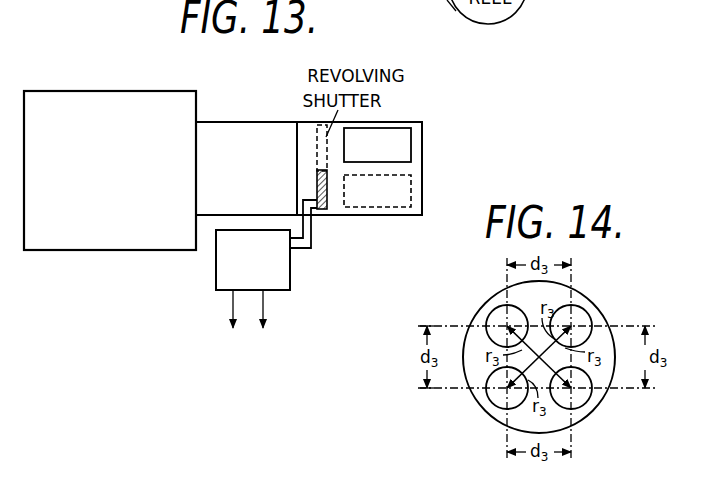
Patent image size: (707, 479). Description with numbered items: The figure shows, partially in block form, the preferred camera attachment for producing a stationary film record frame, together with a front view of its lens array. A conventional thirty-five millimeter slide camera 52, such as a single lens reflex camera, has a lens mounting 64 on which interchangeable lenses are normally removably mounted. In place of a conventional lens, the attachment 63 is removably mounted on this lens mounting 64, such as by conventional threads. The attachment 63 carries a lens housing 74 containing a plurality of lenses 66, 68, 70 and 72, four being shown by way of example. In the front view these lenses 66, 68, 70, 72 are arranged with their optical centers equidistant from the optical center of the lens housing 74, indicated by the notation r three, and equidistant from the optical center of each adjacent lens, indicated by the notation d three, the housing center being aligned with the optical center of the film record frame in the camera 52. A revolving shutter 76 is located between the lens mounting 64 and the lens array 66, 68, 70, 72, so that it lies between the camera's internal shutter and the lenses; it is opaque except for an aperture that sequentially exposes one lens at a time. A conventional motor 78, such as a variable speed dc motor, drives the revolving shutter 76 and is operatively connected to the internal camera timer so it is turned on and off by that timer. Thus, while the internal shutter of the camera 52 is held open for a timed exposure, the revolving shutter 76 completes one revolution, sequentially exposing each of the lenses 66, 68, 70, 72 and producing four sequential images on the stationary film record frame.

In FIG. 13, the 35 millimeter slide camera 52 is at (153, 91).
In FIG. 13, the lens mounting 64 is at (245, 122).
In FIG. 13, the attachment 63 is at (375, 215).
In FIG. 13, the lens housing 74 is at (422, 122).
In FIG. 13, the revolving shutter 76 is at (322, 215).
In FIG. 13, the motor 78 is at (292, 273).
In FIG. 14, the lens 66 is at (489, 318).
In FIG. 14, the lens 68 is at (582, 312).
In FIG. 14, the lens 70 is at (586, 396).
In FIG. 14, the lens 72 is at (491, 398).